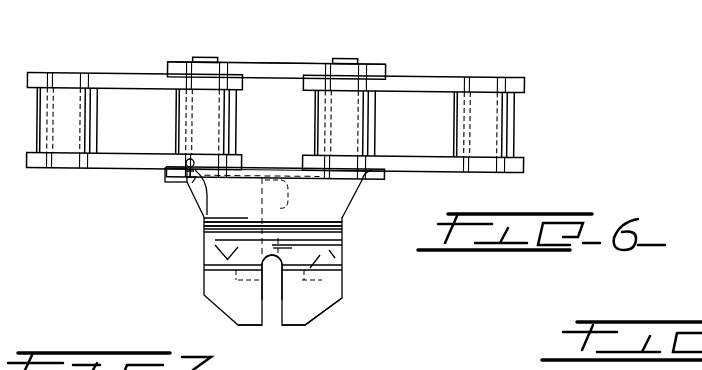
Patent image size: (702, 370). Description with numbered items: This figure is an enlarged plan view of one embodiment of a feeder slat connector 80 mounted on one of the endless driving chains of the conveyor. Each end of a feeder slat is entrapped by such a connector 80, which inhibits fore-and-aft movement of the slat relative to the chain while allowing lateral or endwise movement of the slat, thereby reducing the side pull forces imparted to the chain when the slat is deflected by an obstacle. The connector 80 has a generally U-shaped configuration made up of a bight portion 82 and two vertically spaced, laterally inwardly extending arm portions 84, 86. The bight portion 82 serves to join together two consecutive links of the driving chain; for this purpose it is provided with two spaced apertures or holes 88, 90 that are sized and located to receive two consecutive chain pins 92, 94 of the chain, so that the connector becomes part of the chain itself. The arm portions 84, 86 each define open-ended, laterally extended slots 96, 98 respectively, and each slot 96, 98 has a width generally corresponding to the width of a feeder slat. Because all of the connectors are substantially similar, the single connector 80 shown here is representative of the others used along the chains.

The connector 80 is at (242, 264).
The bight portion 82 is at (344, 148).
The arm portion 84 is at (318, 300).
The arm portion 86 is at (207, 264).
The hole 88 is at (182, 165).
The hole 90 is at (383, 145).
The chain pin 92 is at (207, 58).
The chain pin 94 is at (345, 58).
The slot 96 is at (272, 305).
The slot 98 is at (275, 218).